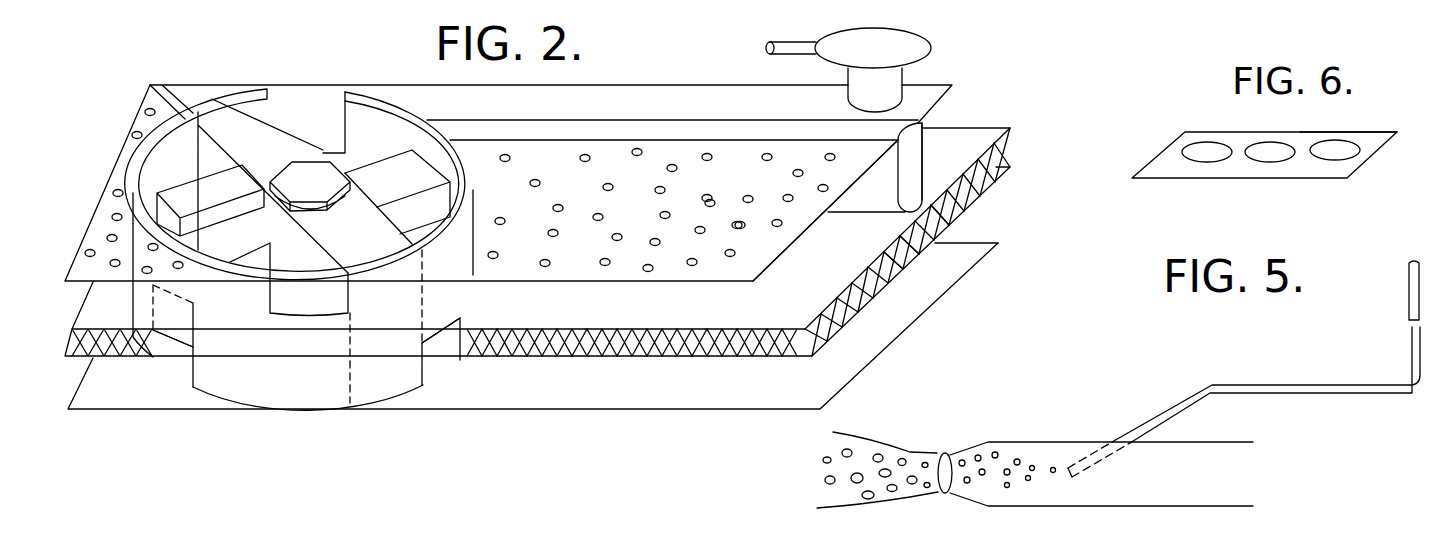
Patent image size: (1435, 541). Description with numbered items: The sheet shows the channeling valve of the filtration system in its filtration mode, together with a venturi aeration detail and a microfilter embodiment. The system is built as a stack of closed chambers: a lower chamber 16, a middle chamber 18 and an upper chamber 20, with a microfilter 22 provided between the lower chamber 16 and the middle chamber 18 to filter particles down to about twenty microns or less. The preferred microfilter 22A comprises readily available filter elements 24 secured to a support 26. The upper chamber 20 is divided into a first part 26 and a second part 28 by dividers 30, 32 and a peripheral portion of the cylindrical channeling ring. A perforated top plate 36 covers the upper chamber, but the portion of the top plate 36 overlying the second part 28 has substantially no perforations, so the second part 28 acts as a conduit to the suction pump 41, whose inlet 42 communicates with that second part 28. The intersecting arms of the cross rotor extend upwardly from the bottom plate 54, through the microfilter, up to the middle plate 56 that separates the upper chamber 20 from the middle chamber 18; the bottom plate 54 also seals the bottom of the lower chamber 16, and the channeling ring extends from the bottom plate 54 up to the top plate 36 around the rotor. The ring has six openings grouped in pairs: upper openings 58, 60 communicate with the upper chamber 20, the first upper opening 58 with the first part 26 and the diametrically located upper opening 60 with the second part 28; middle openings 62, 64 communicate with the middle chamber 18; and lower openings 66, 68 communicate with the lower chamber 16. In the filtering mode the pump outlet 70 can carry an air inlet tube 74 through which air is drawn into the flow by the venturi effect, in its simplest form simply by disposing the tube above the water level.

In FIG. 2, the lower chamber 16 is at (922, 270).
In FIG. 2, the middle chamber 18 is at (928, 226).
In FIG. 2, the upper chamber 20 is at (900, 270).
In FIG. 2, the microfilter 22 is at (903, 280).
In FIG. 6, the microfilter embodiment 22A is at (1383, 153).
In FIG. 6, the filter elements 24 is at (1330, 150).
In FIG. 2, the first part of upper chamber 26 is at (868, 195).
In FIG. 6, the first part of upper chamber 26 is at (1366, 140).
In FIG. 2, the second part of upper chamber 28 is at (940, 145).
In FIG. 2, the divider 30 is at (693, 128).
In FIG. 2, the divider 32 is at (176, 96).
In FIG. 2, the top plate 36 is at (802, 167).
In FIG. 2, the suction pump 41 is at (932, 50).
In FIG. 2, the pump inlet 42 is at (882, 85).
In FIG. 2, the bottom plate 54 is at (824, 386).
In FIG. 2, the middle plate 56 is at (837, 276).
In FIG. 2, the upper opening 58 is at (341, 296).
In FIG. 2, the upper opening 60 is at (340, 122).
In FIG. 2, the middle opening 62 is at (303, 186).
In FIG. 2, the middle opening 64 is at (172, 183).
In FIG. 2, the lower opening 66 is at (428, 362).
In FIG. 2, the lower opening 68 is at (186, 372).
In FIG. 5, the pump outlet 70 is at (1187, 476).
In FIG. 5, the air inlet tube 74 is at (1310, 385).